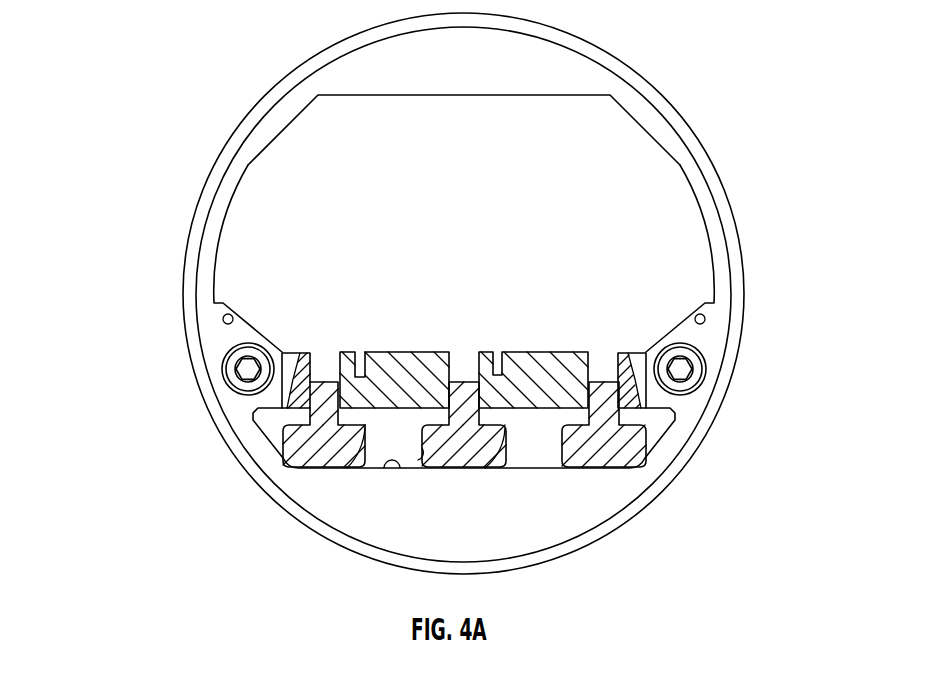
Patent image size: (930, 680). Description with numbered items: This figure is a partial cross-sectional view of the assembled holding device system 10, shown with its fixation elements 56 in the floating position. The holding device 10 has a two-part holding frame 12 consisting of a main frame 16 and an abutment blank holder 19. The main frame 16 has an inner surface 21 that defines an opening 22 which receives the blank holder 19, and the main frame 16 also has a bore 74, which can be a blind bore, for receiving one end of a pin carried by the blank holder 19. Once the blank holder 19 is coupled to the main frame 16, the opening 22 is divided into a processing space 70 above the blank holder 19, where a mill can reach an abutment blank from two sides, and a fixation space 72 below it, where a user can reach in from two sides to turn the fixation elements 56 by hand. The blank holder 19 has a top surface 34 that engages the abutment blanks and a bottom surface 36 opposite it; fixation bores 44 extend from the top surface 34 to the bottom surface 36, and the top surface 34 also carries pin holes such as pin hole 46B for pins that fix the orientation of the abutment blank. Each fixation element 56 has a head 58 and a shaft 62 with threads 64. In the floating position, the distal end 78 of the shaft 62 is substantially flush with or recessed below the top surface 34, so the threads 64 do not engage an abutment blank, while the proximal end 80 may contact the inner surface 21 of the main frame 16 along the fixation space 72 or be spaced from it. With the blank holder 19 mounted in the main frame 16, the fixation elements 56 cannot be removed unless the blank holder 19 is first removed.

The holding device system 10 is at (101, 28).
The two-part holding frame 12 is at (736, 102).
The main frame 16 is at (648, 80).
The abutment blank holder 19 is at (287, 352).
The inner surface 21 is at (385, 464).
The opening 22 is at (268, 192).
The top surface 34 is at (390, 352).
The bottom surface 36 is at (558, 412).
The fixation bore 44 is at (460, 358).
The pin hole 46B is at (500, 352).
The fixation element 56 is at (418, 466).
The head 58 is at (500, 440).
The shaft 62 is at (485, 468).
The threads 64 is at (348, 468).
The processing space 70 is at (668, 185).
The fixation space 72 is at (655, 435).
The bore 74 is at (708, 322).
The distal end 78 is at (332, 383).
The proximal end 80 is at (302, 466).